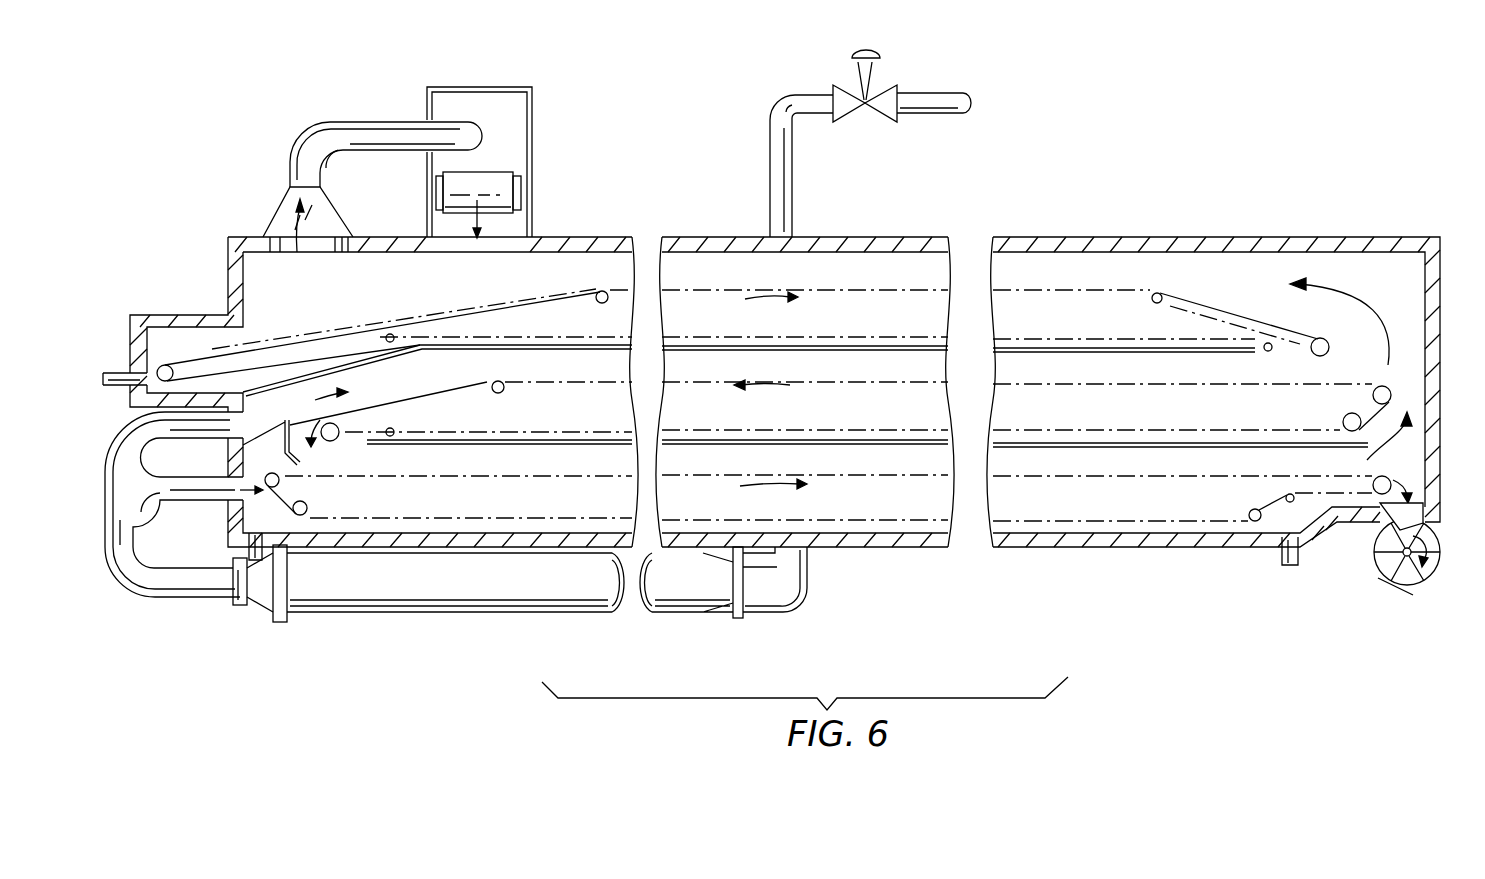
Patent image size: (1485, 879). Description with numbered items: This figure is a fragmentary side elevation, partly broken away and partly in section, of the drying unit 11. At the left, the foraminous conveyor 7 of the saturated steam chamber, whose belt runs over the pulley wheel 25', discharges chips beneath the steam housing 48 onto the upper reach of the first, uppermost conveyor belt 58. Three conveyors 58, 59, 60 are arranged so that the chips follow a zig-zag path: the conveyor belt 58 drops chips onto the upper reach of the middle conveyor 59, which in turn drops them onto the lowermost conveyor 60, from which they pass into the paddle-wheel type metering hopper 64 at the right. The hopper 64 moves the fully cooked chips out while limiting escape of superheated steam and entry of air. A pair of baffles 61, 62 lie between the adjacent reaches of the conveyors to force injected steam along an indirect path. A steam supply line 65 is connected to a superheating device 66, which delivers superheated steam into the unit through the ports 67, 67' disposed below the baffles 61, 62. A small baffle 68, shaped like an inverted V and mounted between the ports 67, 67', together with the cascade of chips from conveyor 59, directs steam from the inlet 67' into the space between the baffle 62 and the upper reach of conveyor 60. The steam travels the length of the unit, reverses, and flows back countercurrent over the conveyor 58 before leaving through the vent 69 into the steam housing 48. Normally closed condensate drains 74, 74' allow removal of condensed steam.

The steam housing 48 is at (533, 105).
The foraminous conveyor 7 is at (500, 172).
The pulley wheel 25' is at (516, 183).
The vent 69 is at (333, 212).
The steam supply line 65 is at (795, 178).
The drying unit 11 is at (1078, 198).
The condensate drain 74 is at (179, 447).
The port 67 is at (202, 491).
The port 67' is at (212, 505).
The small baffle 68 is at (293, 414).
The conveyor belt 58 is at (473, 302).
The baffle 61 is at (1052, 354).
The middle conveyor 59 is at (1235, 383).
The baffle 62 is at (1097, 443).
The lowermost conveyor 60 is at (549, 478).
The superheating device 66 is at (553, 602).
The condensate drain 74' is at (1315, 566).
The paddle-wheel type metering hopper 64 is at (1433, 540).